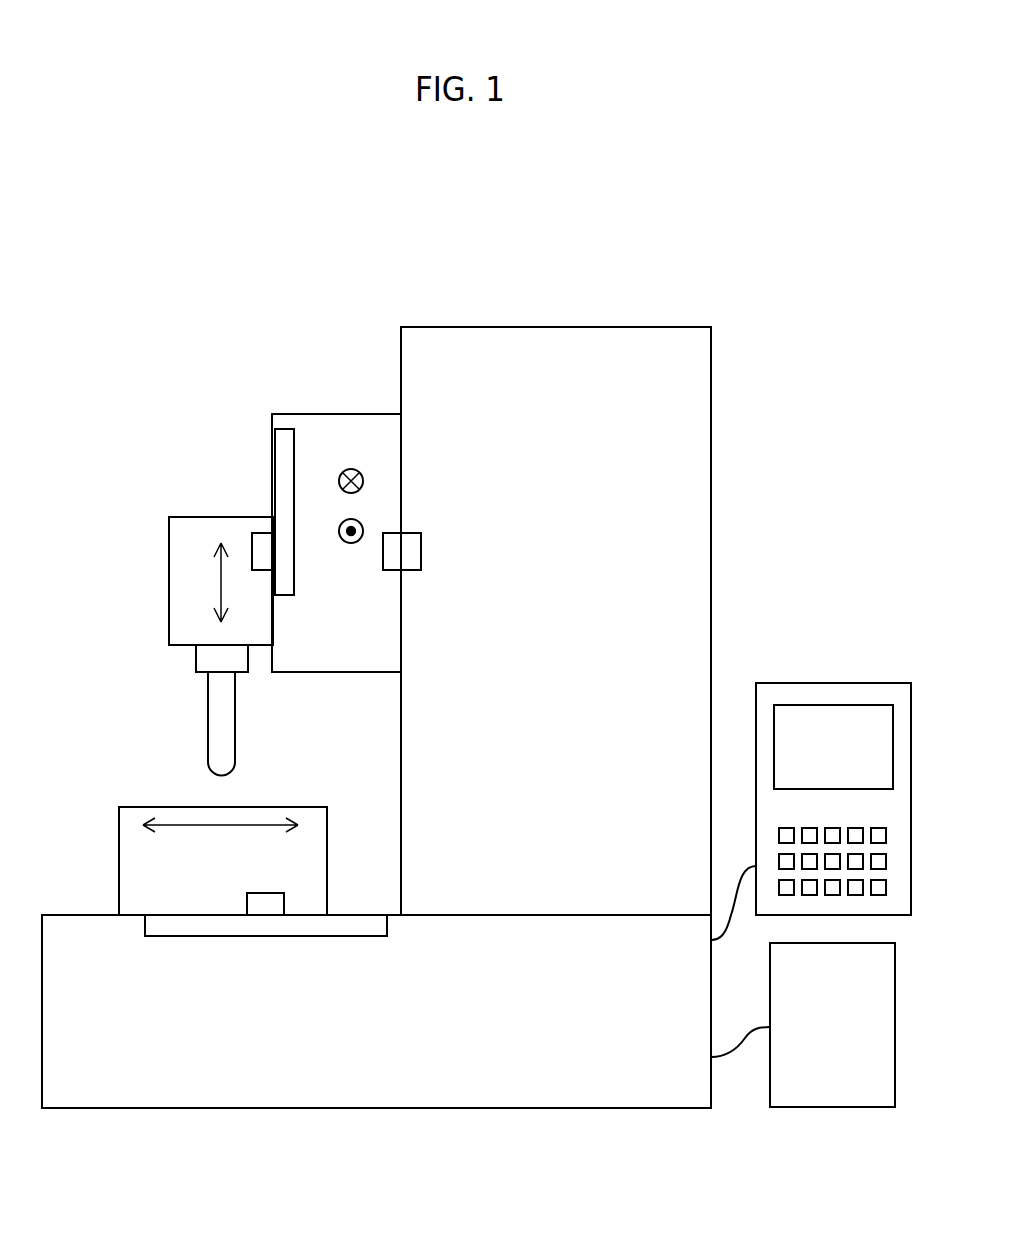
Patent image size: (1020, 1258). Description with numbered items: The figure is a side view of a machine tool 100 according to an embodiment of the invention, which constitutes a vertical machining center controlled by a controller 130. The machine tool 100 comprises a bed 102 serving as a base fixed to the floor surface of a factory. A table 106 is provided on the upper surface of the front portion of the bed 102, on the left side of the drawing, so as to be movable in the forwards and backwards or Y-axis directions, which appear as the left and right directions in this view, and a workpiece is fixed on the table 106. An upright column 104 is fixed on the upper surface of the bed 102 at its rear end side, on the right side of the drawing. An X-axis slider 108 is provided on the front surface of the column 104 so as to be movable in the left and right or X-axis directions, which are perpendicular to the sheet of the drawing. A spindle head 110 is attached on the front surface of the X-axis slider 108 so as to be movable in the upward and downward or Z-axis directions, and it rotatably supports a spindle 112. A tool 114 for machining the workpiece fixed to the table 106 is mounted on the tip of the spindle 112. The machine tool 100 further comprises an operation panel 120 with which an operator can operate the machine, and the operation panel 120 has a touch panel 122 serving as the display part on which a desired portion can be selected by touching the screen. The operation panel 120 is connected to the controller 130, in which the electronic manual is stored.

The machine tool 100 is at (656, 213).
The bed 102 is at (591, 1095).
The column 104 is at (694, 447).
The table 106 is at (133, 863).
The X-axis slider 108 is at (338, 430).
The spindle head 110 is at (198, 530).
The spindle 112 is at (198, 662).
The tool 114 is at (218, 708).
The operation panel 120 is at (807, 666).
The touch panel 122 is at (893, 722).
The controller 130 is at (834, 1108).